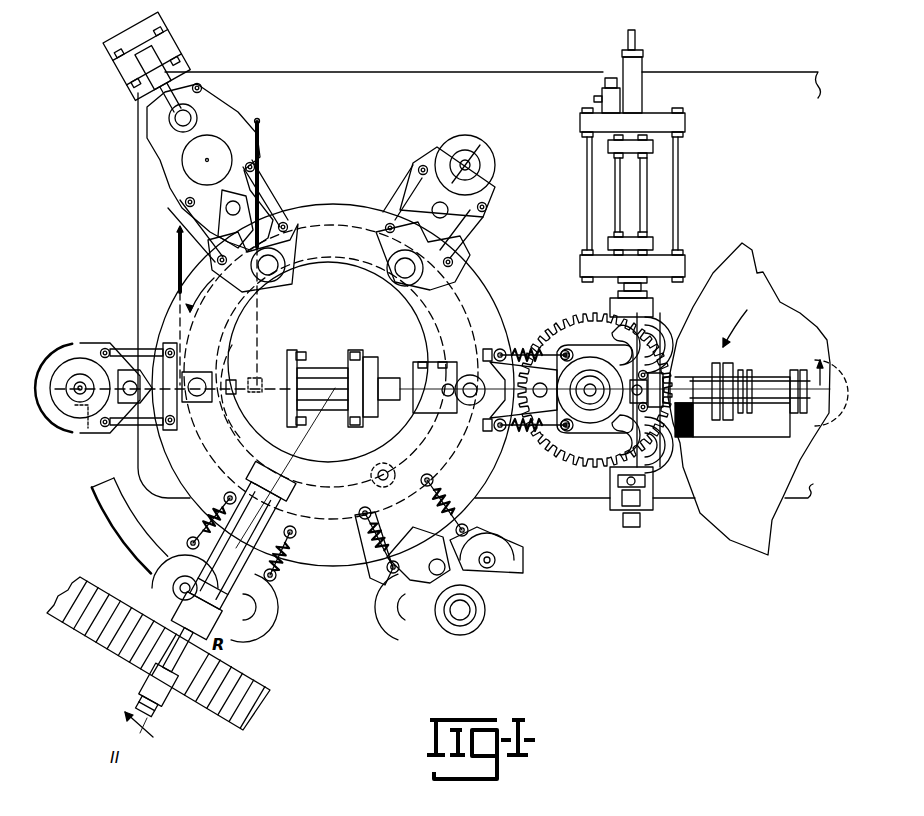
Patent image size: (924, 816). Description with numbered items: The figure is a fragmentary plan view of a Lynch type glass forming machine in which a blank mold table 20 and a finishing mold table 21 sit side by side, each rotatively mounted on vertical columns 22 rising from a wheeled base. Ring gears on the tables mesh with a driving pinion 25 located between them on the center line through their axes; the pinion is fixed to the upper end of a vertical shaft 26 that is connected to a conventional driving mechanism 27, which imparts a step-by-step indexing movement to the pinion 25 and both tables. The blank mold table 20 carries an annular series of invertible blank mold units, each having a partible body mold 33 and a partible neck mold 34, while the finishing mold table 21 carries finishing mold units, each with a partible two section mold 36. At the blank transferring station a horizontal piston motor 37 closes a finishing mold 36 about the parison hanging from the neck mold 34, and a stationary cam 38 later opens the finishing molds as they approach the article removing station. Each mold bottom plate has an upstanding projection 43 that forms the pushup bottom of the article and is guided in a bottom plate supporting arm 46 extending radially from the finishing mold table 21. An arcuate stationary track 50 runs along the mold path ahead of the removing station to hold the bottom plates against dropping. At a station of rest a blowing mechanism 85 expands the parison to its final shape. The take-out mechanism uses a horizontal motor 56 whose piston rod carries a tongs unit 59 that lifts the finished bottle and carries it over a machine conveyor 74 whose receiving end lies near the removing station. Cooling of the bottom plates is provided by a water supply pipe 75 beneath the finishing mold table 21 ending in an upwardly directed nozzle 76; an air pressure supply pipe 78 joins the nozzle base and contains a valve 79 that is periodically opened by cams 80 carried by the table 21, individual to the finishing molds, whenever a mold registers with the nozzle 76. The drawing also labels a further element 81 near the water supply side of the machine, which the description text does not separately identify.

The blank mold table 20 is at (733, 252).
The finishing mold table 21 is at (347, 213).
The vertical columns 22 is at (815, 400).
The driving pinion 25 is at (583, 310).
The vertical shaft 26 is at (482, 72).
The driving mechanism 27 is at (687, 259).
The partible body mold 33 is at (650, 325).
The partible neck mold 34 is at (613, 330).
The partible two section mold 36 is at (490, 160).
The horizontal piston motor 37 is at (343, 343).
The stationary cam 38 is at (238, 430).
The upstanding projection 43 is at (487, 612).
The bottom plate supporting arm 46 is at (438, 592).
The arcuate stationary track 50 is at (100, 505).
The horizontal motor 56 is at (300, 498).
The tongs unit 59 is at (178, 609).
The machine conveyor 74 is at (120, 655).
The water supply pipe 75 is at (180, 252).
The nozzle 76 is at (76, 420).
The air pressure supply pipe 78 is at (258, 133).
The valve 79 is at (221, 402).
The cams 80 is at (255, 350).
The wheel 81 is at (70, 350).
The blowing mechanism 85 is at (225, 137).